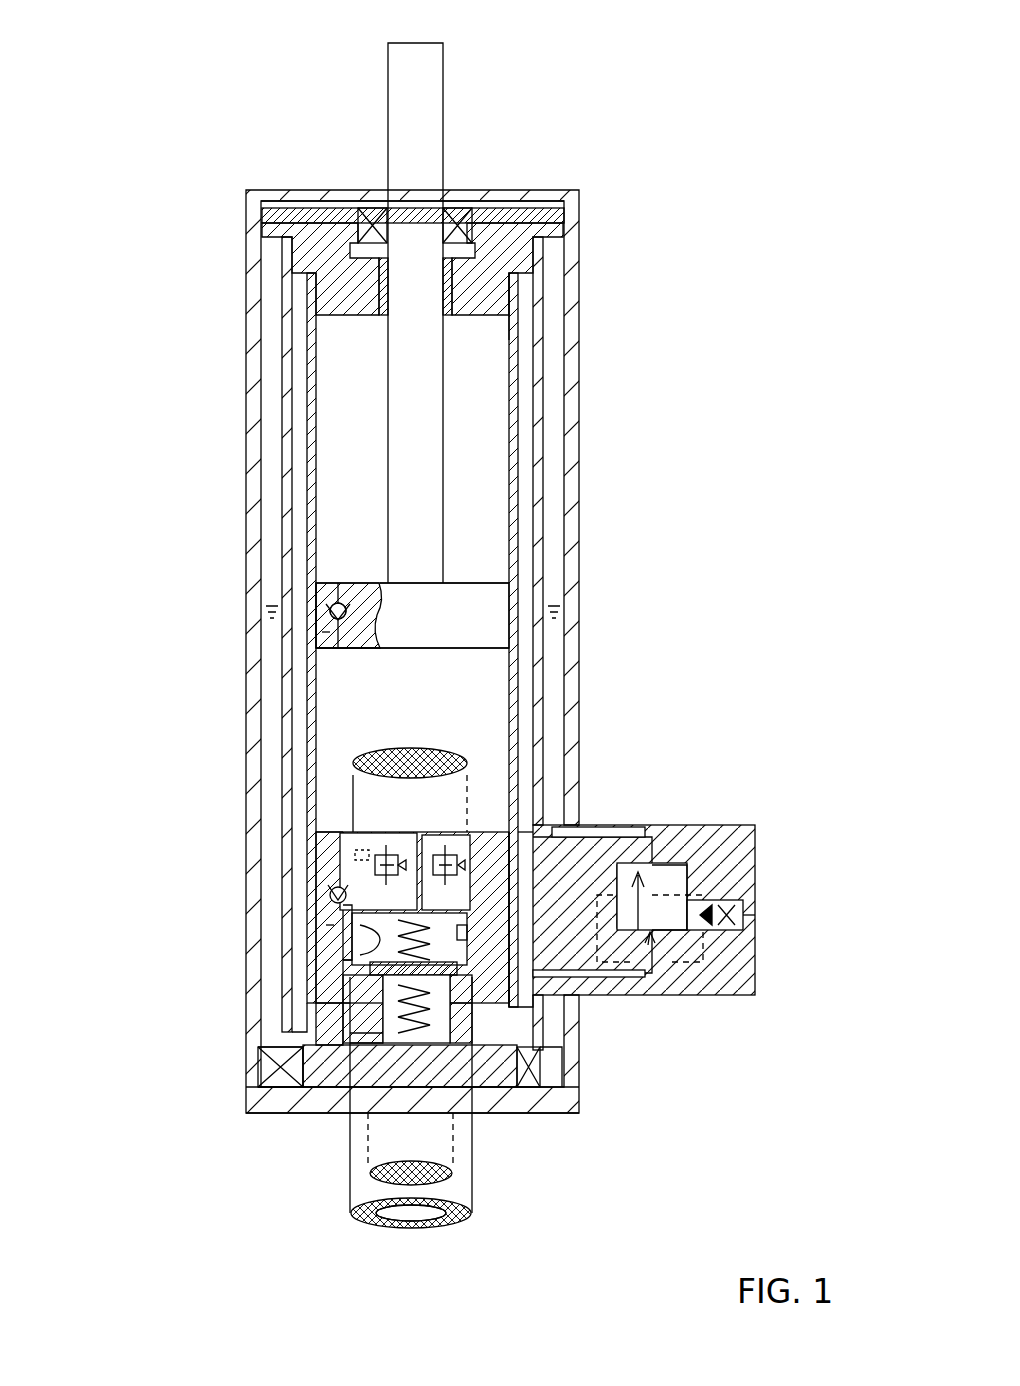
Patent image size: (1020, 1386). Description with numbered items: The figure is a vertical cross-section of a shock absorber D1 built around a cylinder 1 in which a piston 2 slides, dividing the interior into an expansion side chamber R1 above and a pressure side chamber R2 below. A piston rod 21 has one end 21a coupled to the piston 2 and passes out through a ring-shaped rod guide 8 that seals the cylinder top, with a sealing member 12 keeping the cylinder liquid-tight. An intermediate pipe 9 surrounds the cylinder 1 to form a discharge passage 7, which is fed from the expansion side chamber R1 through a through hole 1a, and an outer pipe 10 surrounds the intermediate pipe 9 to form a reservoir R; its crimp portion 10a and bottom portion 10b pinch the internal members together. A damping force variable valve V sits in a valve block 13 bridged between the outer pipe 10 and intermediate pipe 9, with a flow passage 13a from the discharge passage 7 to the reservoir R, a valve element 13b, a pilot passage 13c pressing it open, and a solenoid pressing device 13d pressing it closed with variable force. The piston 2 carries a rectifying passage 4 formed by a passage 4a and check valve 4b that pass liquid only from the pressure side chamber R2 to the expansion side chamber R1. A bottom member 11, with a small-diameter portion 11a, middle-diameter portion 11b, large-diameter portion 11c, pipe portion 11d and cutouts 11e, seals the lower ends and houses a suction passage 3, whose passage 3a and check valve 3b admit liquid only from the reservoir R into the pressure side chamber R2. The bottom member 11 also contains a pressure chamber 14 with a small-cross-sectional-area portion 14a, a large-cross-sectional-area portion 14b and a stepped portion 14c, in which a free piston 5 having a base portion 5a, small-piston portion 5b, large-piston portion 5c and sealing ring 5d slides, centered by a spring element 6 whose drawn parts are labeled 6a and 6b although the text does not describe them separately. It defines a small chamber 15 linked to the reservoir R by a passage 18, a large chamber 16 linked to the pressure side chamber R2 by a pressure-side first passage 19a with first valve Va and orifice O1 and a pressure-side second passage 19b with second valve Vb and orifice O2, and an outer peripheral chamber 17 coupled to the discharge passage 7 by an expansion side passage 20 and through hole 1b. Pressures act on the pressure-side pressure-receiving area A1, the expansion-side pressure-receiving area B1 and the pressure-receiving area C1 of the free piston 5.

The shock absorber D1 is at (228, 196).
The cylinder 1 is at (518, 440).
The through hole 1a is at (520, 345).
The through hole 1b is at (530, 1025).
The piston 2 is at (520, 592).
The suction passage 3 is at (322, 950).
The passage 3a is at (342, 905).
The check valve 3b is at (330, 925).
The rectifying passage 4 is at (322, 645).
The passage 4a is at (330, 606).
The check valve 4b is at (328, 632).
The free piston 5 is at (540, 880).
The base portion 5a is at (410, 1067).
The small-piston portion 5b is at (358, 1040).
The large-piston portion 5c is at (545, 838).
The sealing ring 5d is at (345, 960).
The spring element 6 is at (330, 894).
The valve chamber 6a is at (409, 943).
The lower passage 6b is at (407, 1060).
The discharge passage 7 is at (530, 412).
The rod guide 8 is at (522, 252).
The intermediate pipe 9 is at (530, 268).
The outer pipe 10 is at (545, 392).
The crimp portion 10a is at (548, 202).
The bottom portion 10b is at (562, 1070).
The bottom member 11 is at (495, 835).
The small-diameter portion 11a is at (342, 852).
The middle-diameter portion 11b is at (275, 1066).
The large-diameter portion 11c is at (305, 1082).
The pipe portion 11d is at (332, 1085).
The cutouts 11e is at (352, 1092).
The sealing member 12 is at (330, 210).
The valve block 13 is at (742, 825).
The flow passage 13a is at (655, 838).
The valve element 13b is at (750, 880).
The pilot passage 13c is at (632, 968).
The pressing device 13d is at (748, 930).
The pressure chamber 14 is at (462, 1045).
The small-cross-sectional-area portion 14a is at (385, 1045).
The large-cross-sectional-area portion 14b is at (348, 1000).
The stepped portion 14c is at (472, 1045).
The small chamber 15 is at (442, 1045).
The large chamber 16 is at (345, 1040).
The outer peripheral chamber 17 is at (372, 1032).
The passage 18 is at (462, 1060).
The pressure-side first passage 19a is at (468, 790).
The pressure-side second passage 19b is at (352, 790).
The expansion side passage 20 is at (540, 1065).
The piston rod 21 is at (448, 115).
The one end 21a is at (458, 540).
The reservoir R is at (556, 480).
The expansion side chamber R1 is at (342, 368).
The pressure side chamber R2 is at (330, 678).
The pressure-side pressure-receiving area A1 is at (422, 752).
The expansion-side pressure-receiving area B1 is at (402, 1230).
The pressure-receiving area C1 is at (420, 1225).
The damping force variable valve V is at (690, 862).
The first valve Va is at (392, 852).
The second valve Vb is at (375, 858).
The orifice O1 is at (449, 933).
The orifice O2 is at (440, 856).